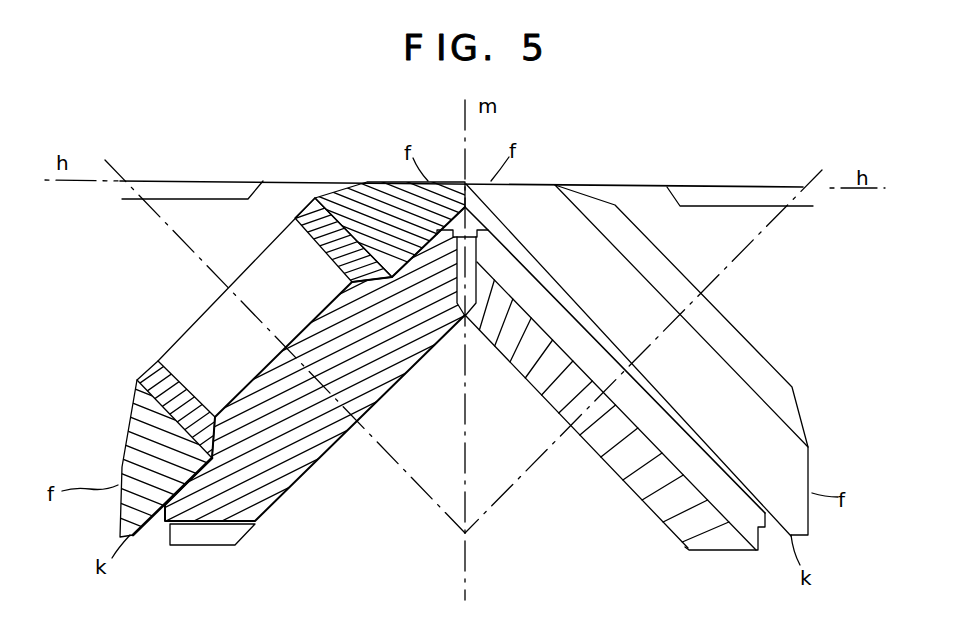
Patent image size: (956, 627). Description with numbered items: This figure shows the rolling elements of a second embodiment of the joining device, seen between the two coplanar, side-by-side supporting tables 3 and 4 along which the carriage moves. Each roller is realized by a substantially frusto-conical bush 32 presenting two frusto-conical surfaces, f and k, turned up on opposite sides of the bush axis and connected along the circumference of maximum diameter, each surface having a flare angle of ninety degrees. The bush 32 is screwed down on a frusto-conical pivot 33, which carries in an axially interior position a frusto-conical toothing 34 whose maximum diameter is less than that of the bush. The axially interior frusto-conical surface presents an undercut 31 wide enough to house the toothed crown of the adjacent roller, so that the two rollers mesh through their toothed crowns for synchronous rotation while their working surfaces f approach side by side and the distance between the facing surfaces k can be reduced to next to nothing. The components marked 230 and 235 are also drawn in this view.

The supporting table 3 is at (188, 187).
The supporting table 4 is at (716, 197).
The undercut 31 is at (152, 520).
The frusto-conical bush 32 is at (138, 426).
The frusto-conical pivot 33 is at (317, 442).
The frusto-conical toothing 34 is at (214, 530).
The right die plate 230 is at (677, 400).
The hatched spacer strip 235 is at (590, 448).